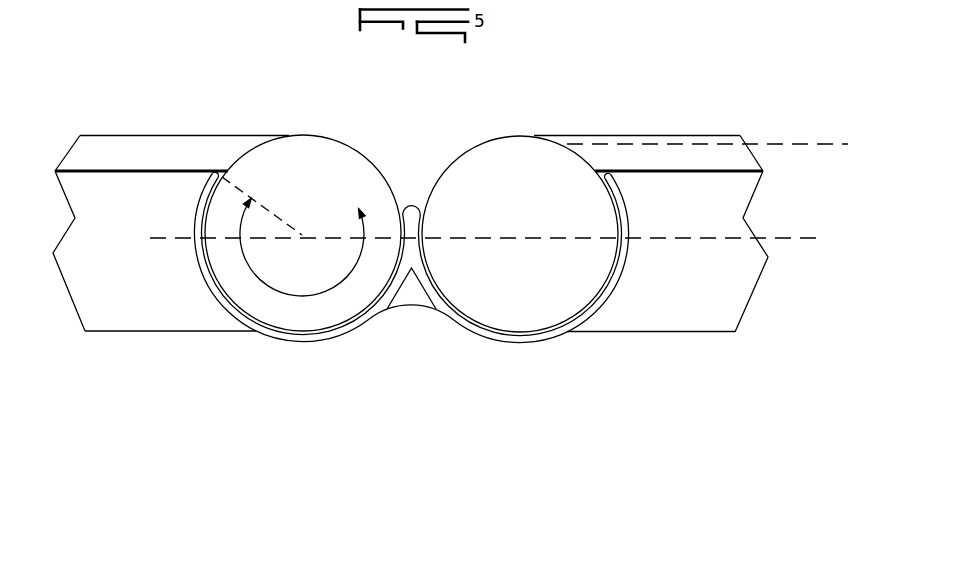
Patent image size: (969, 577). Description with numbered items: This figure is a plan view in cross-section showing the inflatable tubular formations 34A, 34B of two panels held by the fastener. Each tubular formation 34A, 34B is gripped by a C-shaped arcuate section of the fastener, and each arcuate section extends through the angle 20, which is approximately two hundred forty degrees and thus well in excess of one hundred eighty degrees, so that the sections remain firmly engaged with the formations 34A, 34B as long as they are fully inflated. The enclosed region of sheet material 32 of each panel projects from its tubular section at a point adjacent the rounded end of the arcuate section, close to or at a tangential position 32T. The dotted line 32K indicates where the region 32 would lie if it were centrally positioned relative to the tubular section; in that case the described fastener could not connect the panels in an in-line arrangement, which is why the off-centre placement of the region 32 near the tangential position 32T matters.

The angle 20 is at (307, 296).
The enclosed region of sheet material 32 is at (705, 171).
The tangential position 32T is at (777, 144).
The dotted line indicating central position 32K is at (780, 238).
The tubular formation 34A is at (518, 136).
The tubular formation 34B is at (300, 135).